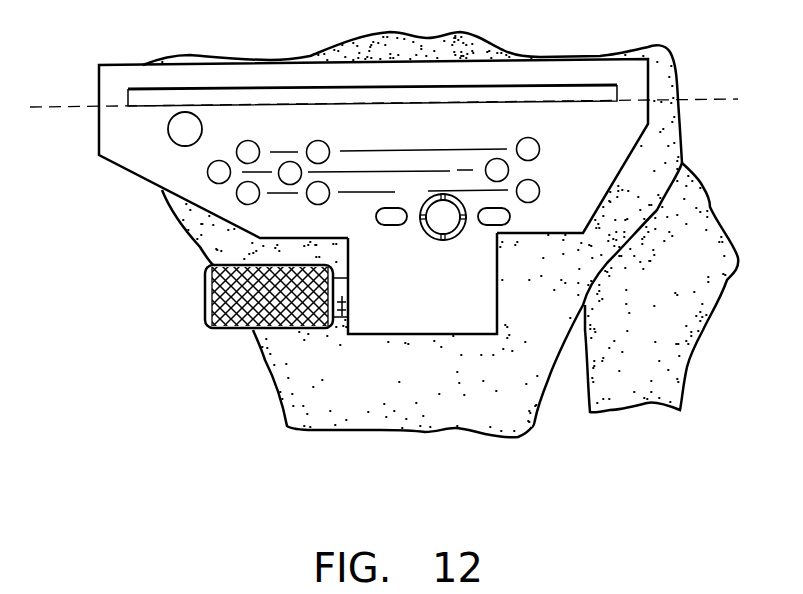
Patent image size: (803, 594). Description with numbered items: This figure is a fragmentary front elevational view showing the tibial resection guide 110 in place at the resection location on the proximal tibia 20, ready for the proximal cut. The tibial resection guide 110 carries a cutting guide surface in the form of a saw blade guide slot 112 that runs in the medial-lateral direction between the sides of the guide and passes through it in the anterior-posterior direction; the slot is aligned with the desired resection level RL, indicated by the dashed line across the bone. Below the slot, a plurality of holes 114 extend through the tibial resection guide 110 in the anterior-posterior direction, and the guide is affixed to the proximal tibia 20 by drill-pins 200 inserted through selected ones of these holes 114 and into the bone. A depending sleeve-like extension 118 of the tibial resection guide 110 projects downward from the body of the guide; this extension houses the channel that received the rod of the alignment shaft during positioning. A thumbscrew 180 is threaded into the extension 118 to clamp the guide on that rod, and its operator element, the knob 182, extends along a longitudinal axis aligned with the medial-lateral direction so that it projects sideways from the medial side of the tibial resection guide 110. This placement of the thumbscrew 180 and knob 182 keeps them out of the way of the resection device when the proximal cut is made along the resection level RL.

The proximal tibia 20 is at (679, 76).
The resection level RL is at (46, 107).
The tibial resection guide 110 is at (109, 63).
The saw blade guide slot 112 is at (575, 98).
The holes 114 is at (237, 207).
The extension 118 is at (481, 335).
The thumbscrew 180 is at (342, 322).
The knob 182 is at (233, 328).
The drill-pins 200 is at (541, 190).